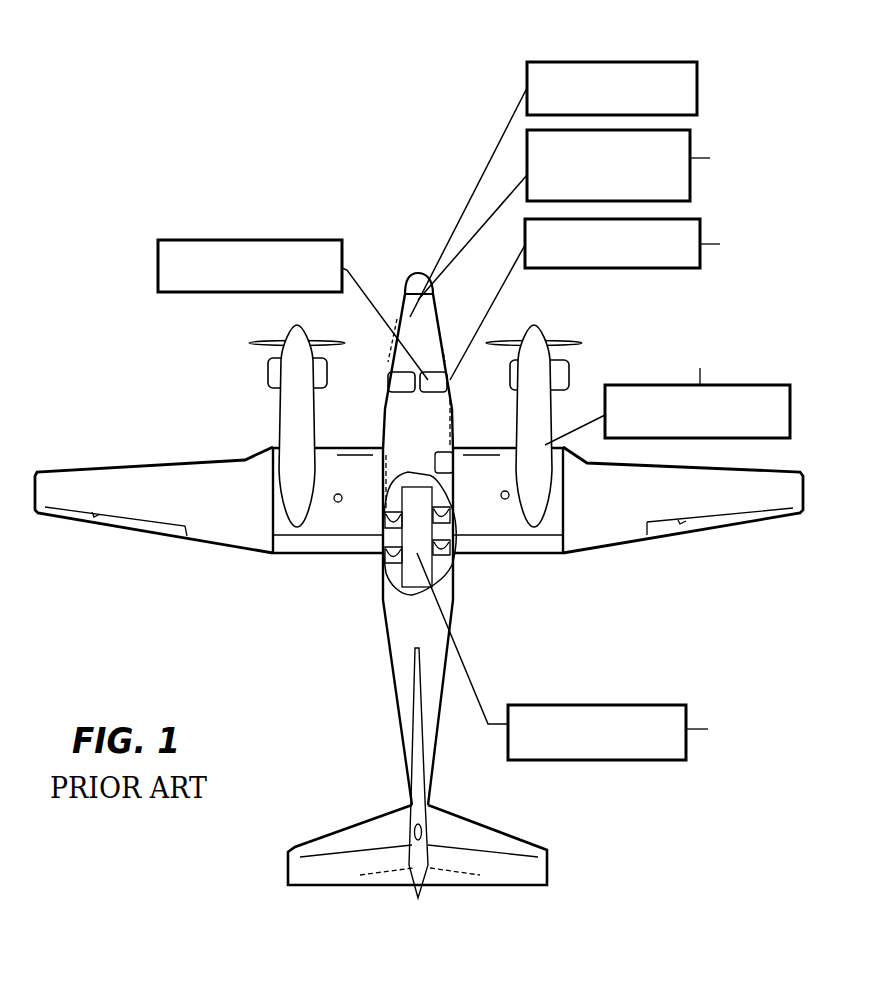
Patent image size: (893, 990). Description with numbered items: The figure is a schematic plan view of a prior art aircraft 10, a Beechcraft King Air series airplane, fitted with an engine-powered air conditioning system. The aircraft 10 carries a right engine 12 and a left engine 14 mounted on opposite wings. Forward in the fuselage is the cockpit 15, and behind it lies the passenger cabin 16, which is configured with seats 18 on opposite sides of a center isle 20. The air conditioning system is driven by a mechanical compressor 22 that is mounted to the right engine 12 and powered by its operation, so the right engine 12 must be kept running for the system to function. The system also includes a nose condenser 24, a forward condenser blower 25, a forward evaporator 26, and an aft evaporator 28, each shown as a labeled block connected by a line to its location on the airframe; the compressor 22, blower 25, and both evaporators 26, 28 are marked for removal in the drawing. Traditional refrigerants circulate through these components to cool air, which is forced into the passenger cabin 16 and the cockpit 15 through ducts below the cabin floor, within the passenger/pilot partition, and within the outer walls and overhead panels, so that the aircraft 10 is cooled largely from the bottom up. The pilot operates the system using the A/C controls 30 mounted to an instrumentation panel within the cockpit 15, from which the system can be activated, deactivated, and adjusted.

The aircraft 10 is at (152, 425).
The right engine 12 is at (538, 382).
The left engine 14 is at (303, 422).
The cockpit 15 is at (403, 383).
The passenger cabin 16 is at (387, 537).
The seats 18 is at (392, 555).
The center isle 20 is at (415, 528).
The mechanical compressor 22 is at (740, 385).
The nose condenser 24 is at (563, 62).
The forward condenser blower 25 is at (690, 180).
The forward evaporator 26 is at (635, 268).
The aft evaporator 28 is at (635, 707).
The A/C controls 30 is at (158, 262).